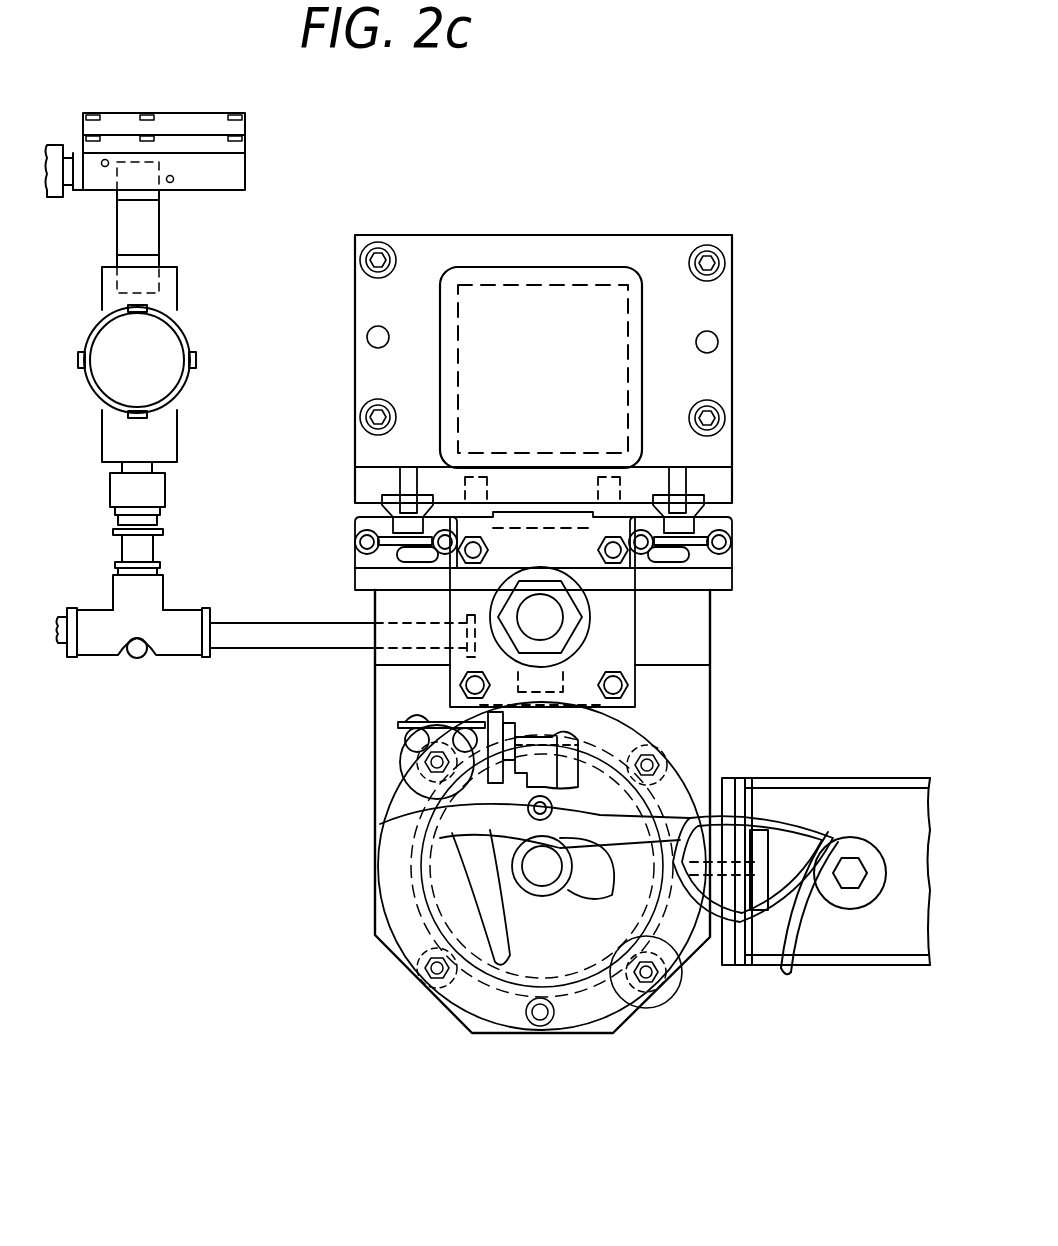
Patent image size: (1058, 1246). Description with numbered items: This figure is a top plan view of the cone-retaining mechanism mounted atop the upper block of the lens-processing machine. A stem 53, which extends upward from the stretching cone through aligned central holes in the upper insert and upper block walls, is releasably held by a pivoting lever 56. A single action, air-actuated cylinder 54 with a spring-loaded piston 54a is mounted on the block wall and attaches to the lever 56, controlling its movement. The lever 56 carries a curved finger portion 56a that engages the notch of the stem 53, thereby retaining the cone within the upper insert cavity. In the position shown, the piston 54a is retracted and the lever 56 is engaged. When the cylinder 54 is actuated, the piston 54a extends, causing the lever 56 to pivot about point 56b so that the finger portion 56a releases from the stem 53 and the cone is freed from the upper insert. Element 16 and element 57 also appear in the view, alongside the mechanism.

The mounting bracket 16 is at (703, 722).
The stem 53 is at (672, 982).
The air-actuated cylinder 54 is at (408, 722).
The spring-loaded piston 54a is at (402, 744).
The pivoting lever 56 is at (575, 748).
The curved finger portion 56a is at (463, 1023).
The pivot point 56b is at (392, 823).
The hub 57 is at (543, 912).